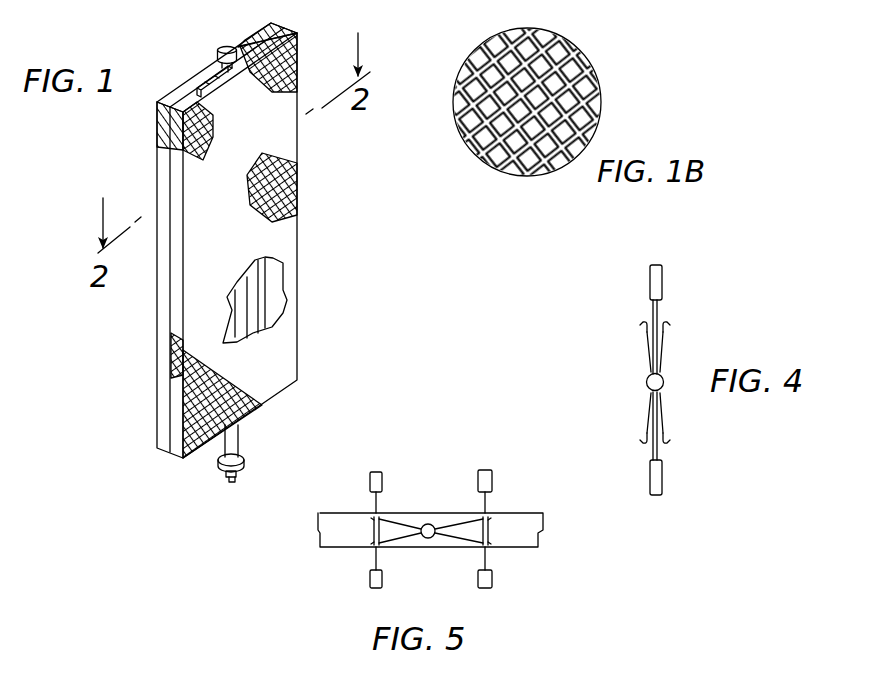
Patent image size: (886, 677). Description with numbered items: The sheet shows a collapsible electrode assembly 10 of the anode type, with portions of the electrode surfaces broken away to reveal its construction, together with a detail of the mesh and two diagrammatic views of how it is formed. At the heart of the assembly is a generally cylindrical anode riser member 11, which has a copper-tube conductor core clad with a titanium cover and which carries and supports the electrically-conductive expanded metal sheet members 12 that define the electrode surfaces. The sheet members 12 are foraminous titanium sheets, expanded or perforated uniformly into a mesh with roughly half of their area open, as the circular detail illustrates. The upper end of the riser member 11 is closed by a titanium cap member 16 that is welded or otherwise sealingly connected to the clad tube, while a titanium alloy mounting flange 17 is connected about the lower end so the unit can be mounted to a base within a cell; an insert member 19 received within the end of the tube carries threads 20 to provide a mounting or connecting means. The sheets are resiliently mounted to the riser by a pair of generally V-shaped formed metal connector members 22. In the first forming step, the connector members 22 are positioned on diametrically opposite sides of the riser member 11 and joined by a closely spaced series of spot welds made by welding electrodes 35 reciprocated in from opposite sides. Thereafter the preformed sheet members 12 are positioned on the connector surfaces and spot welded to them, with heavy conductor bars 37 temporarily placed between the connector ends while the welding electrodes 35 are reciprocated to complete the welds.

In FIG. 1, the electrode assembly 10 is at (122, 152).
In FIG. 1, the anode riser member 11 is at (214, 62).
In FIG. 4, the anode riser member 11 is at (642, 390).
In FIG. 1, the expanded metal sheet members 12 is at (158, 98).
In FIG. 5, the expanded metal sheet members 12 is at (513, 512).
In FIG. 1, the cap member 16 is at (228, 47).
In FIG. 1, the mounting flange 17 is at (244, 459).
In FIG. 1, the insert member 19 is at (240, 469).
In FIG. 1, the threads 20 is at (237, 481).
In FIG. 1, the V-shaped connector members 22 is at (274, 307).
In FIG. 1B, the V-shaped connector members 22 is at (527, 102).
In FIG. 4, the V-shaped connector members 22 is at (642, 354).
In FIG. 4, the welding electrodes 35 is at (661, 303).
In FIG. 5, the welding electrodes 35 is at (370, 481).
In FIG. 5, the conductor bars 37 is at (372, 530).